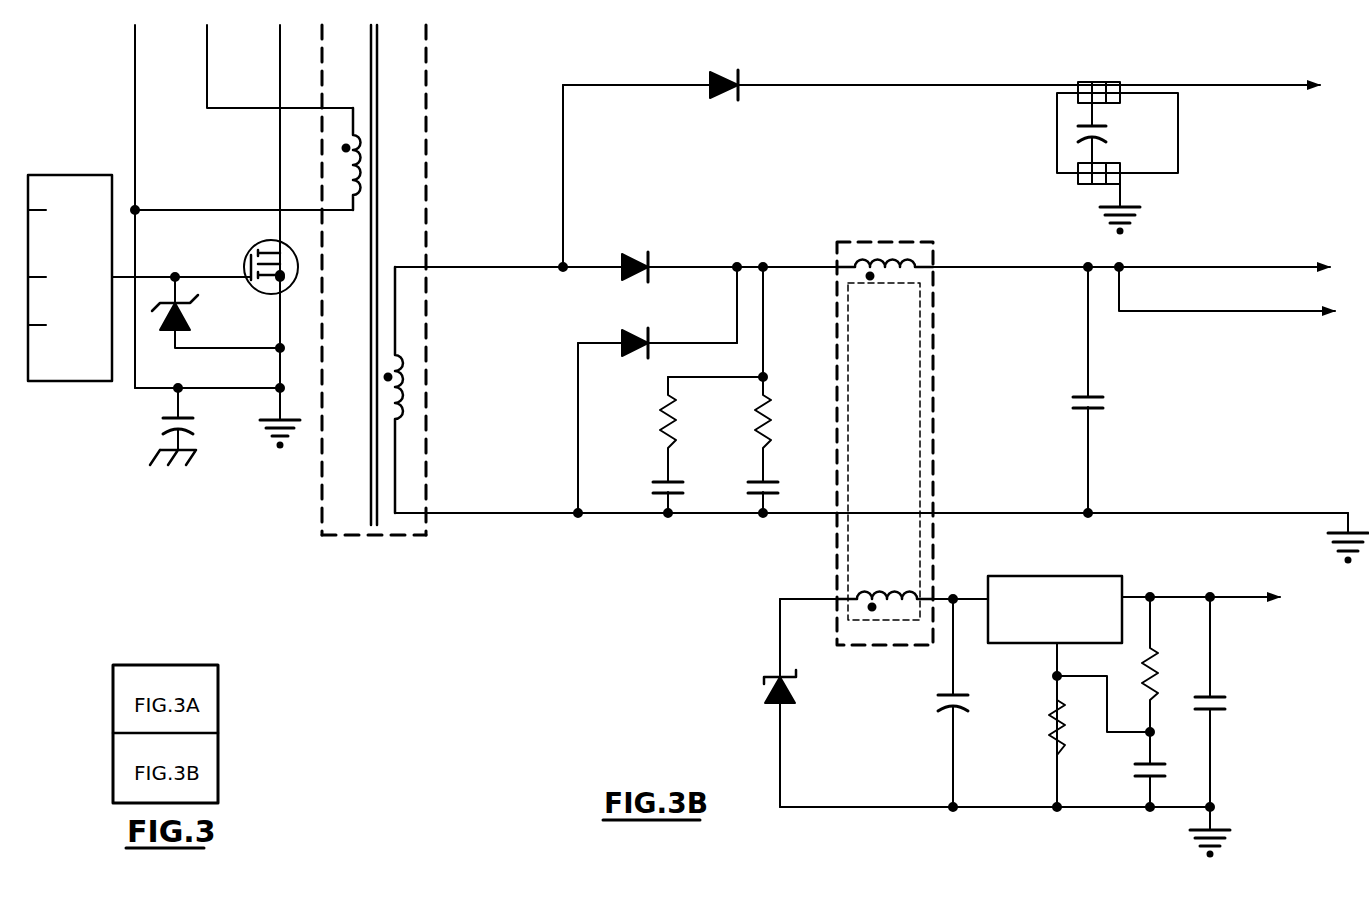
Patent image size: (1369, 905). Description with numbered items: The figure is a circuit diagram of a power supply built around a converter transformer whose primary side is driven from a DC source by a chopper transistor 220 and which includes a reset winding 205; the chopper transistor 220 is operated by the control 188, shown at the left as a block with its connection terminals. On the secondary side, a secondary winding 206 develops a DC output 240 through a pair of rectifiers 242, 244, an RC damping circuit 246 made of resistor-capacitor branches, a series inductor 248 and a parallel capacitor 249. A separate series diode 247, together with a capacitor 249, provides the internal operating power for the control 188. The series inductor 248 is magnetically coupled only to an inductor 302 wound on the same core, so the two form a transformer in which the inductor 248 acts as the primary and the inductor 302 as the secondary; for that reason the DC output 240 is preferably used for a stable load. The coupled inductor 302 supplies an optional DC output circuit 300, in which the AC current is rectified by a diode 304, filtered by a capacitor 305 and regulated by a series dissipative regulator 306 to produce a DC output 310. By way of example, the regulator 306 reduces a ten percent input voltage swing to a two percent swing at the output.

The control 188 is at (52, 175).
The reset winding 205 is at (360, 132).
The chopper transistor 220 is at (251, 250).
The secondary winding 206 is at (412, 390).
The series diode 247 is at (723, 73).
The rectifier 242 is at (638, 255).
The rectifier 244 is at (638, 330).
The RC damping circuit 246 is at (810, 447).
The series inductor 248 is at (887, 250).
The parallel capacitor 249 is at (1097, 410).
The DC output 240 is at (1330, 258).
The inductor 302 is at (910, 590).
The DC output circuit 300 is at (740, 672).
The diode 304 is at (772, 706).
The capacitor 305 is at (950, 693).
The series dissipative regulator 306 is at (1152, 578).
The DC output 310 is at (1272, 600).